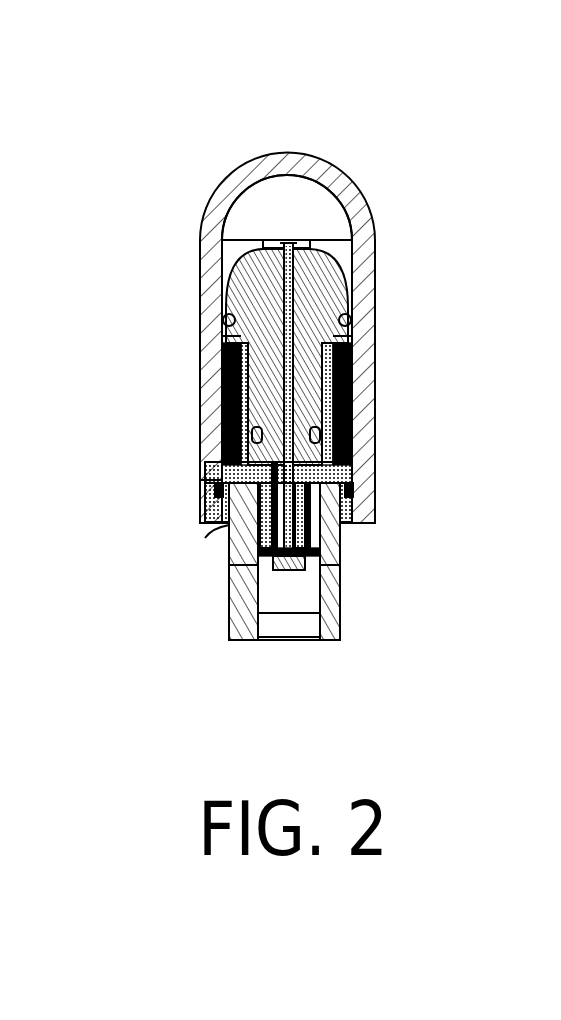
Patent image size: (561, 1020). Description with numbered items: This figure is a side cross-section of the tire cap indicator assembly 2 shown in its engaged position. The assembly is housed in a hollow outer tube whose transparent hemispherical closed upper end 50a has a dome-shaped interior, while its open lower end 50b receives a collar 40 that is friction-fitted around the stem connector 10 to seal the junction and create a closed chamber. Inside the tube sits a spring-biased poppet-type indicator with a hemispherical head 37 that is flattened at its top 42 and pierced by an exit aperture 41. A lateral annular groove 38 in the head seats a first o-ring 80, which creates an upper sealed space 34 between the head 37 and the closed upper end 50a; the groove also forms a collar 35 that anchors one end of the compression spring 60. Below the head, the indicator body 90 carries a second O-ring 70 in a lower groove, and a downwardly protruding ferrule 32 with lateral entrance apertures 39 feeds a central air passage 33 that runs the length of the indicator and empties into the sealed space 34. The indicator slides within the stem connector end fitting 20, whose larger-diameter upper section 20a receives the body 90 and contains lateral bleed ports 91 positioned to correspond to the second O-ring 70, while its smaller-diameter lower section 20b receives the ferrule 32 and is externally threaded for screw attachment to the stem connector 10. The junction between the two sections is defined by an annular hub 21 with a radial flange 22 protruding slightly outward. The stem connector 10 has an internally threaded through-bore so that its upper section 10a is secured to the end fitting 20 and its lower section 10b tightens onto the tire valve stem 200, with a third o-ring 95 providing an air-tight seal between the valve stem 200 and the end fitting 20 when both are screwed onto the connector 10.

The indicator assembly 2 is at (295, 371).
The closed upper end 50a is at (231, 318).
The open lower end 50b is at (398, 522).
The upper sealed space 34 is at (310, 195).
The flattened top 42 is at (222, 241).
The hemispherical head 37 is at (308, 272).
The exit aperture 41 is at (282, 243).
The lateral annular groove 38 is at (225, 318).
The first o-ring 80 is at (348, 320).
The collar 35 is at (352, 336).
The compression spring 60 is at (222, 365).
The body 90 is at (300, 379).
The lateral bleed ports 91 is at (222, 410).
The second O-ring 70 is at (352, 428).
The annular hub 21 is at (222, 440).
The stem connector end fitting 20 is at (372, 479).
The upper section of end fitting 20a is at (352, 460).
The lower section of end fitting 20b is at (372, 500).
The radial flange 22 is at (205, 480).
The stem connector 10 is at (380, 580).
The upper section of stem connector 10a is at (348, 535).
The lower section of stem connector 10b is at (348, 650).
The central air passage 33 is at (229, 518).
The tire valve stem 200 is at (268, 600).
The collar 40 is at (205, 538).
The lateral entrance apertures 39 is at (230, 556).
The third o-ring 95 is at (267, 563).
The ferrule 32 is at (257, 575).